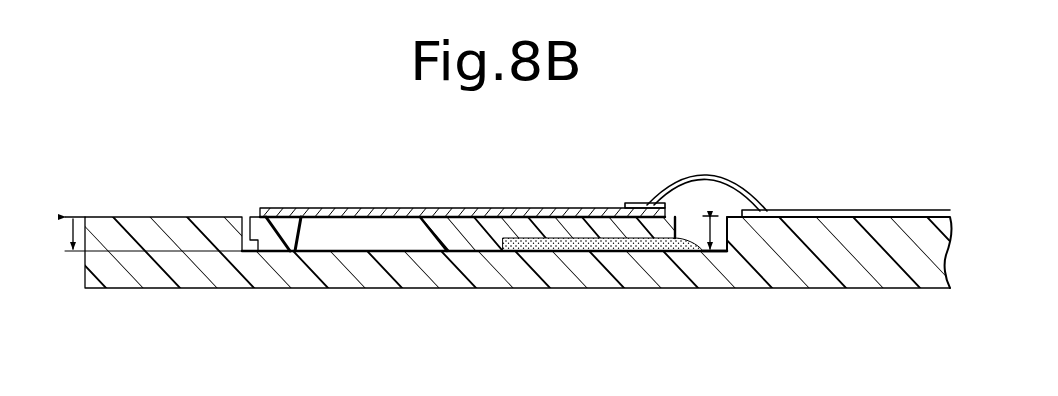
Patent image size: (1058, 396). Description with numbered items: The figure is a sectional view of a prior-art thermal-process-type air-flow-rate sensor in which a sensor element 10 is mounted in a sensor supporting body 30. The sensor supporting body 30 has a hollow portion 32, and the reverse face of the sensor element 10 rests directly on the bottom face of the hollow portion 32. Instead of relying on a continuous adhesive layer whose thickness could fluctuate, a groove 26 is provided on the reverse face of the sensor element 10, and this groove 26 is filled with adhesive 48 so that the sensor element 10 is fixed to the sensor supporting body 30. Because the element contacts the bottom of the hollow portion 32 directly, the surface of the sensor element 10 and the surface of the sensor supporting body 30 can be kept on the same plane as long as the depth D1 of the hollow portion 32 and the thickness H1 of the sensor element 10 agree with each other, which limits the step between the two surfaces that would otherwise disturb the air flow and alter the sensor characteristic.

The sensor element 10 is at (281, 224).
The groove 26 is at (540, 253).
The sensor supporting body 30 is at (220, 270).
The hollow portion 32 is at (722, 251).
The adhesive 48 is at (660, 252).
The thickness of the sensor element H1 is at (68, 232).
The depth of the hollow portion D1 is at (700, 232).